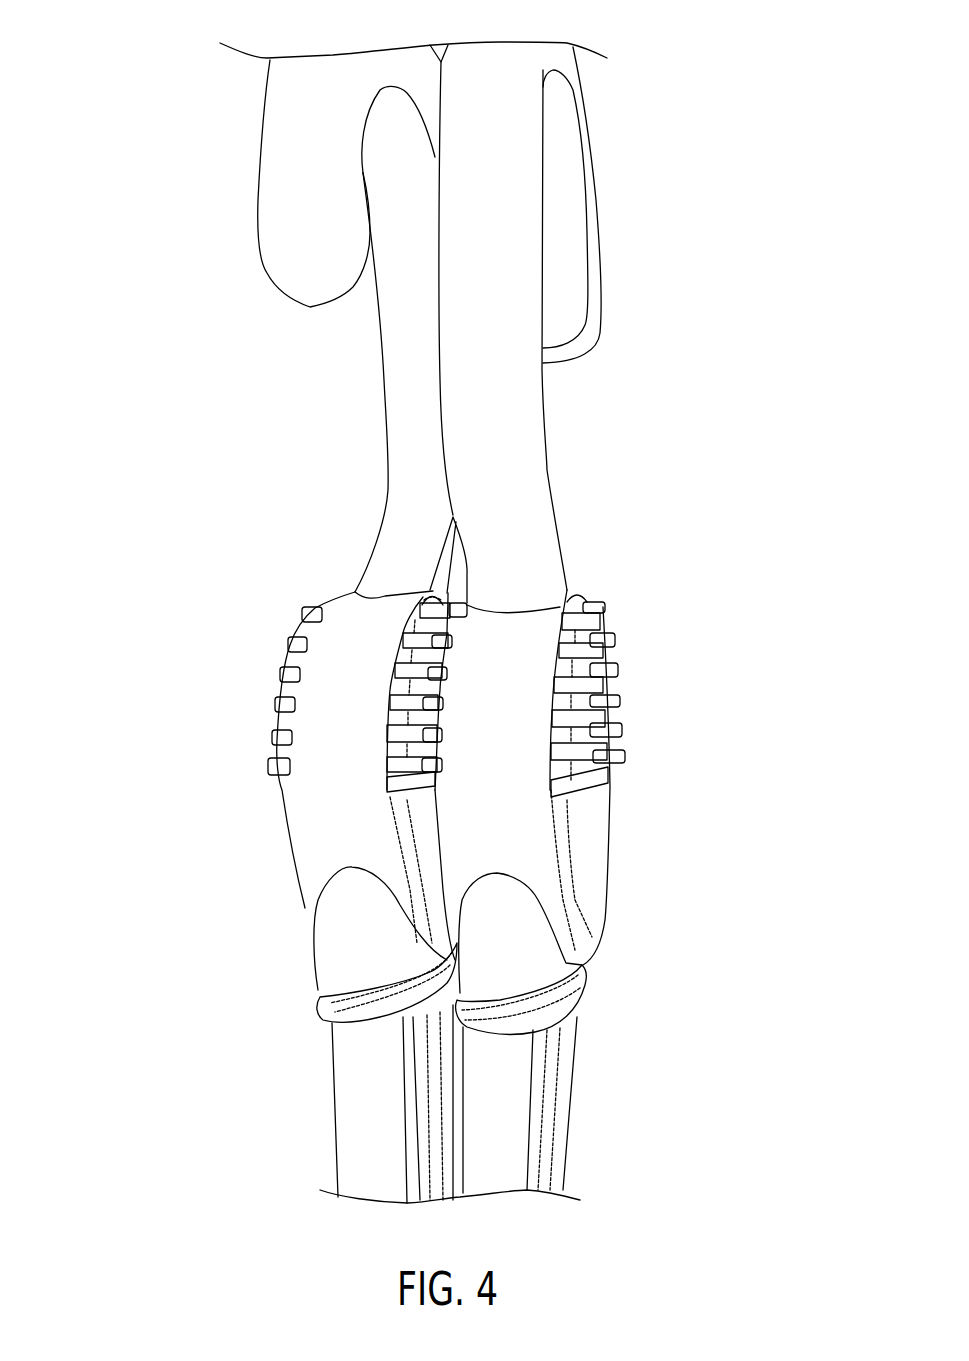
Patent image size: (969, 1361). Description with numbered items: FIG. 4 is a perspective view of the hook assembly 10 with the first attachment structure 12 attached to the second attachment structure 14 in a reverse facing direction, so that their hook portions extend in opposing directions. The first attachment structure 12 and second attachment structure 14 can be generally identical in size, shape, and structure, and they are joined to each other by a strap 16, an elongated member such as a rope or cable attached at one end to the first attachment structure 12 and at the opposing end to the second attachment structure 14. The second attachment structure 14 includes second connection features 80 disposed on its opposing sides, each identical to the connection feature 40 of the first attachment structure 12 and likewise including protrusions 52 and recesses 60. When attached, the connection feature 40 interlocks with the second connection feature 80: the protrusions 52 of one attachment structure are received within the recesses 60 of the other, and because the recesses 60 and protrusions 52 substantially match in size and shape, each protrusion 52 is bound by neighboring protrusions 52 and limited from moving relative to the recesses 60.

The hook assembly 10 is at (118, 73).
The first attachment structure 12 is at (258, 205).
The second attachment structure 14 is at (598, 247).
The strap 16 is at (338, 1110).
The connection feature 40 is at (260, 828).
The protrusions 52 is at (442, 765).
The recesses 60 is at (395, 768).
The second connection feature 80 is at (455, 772).